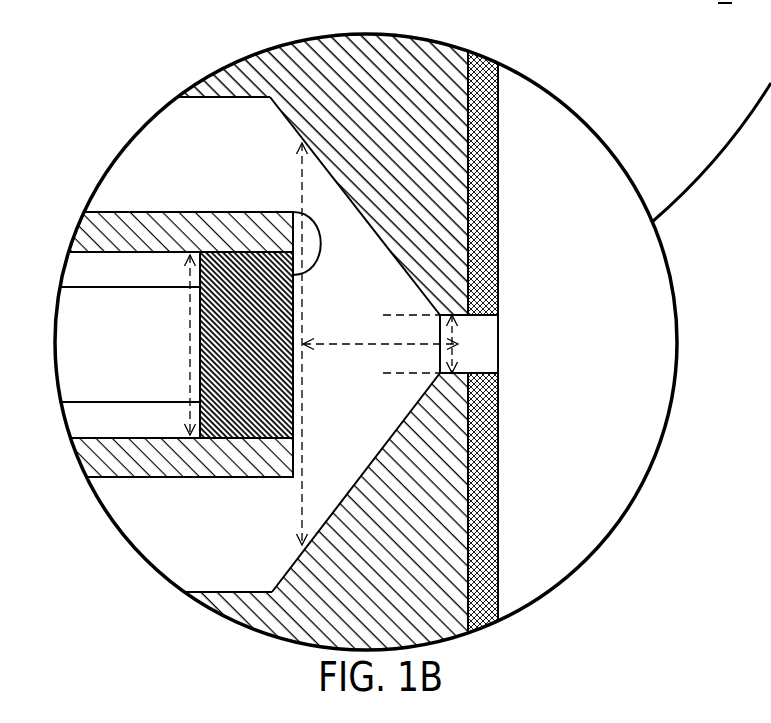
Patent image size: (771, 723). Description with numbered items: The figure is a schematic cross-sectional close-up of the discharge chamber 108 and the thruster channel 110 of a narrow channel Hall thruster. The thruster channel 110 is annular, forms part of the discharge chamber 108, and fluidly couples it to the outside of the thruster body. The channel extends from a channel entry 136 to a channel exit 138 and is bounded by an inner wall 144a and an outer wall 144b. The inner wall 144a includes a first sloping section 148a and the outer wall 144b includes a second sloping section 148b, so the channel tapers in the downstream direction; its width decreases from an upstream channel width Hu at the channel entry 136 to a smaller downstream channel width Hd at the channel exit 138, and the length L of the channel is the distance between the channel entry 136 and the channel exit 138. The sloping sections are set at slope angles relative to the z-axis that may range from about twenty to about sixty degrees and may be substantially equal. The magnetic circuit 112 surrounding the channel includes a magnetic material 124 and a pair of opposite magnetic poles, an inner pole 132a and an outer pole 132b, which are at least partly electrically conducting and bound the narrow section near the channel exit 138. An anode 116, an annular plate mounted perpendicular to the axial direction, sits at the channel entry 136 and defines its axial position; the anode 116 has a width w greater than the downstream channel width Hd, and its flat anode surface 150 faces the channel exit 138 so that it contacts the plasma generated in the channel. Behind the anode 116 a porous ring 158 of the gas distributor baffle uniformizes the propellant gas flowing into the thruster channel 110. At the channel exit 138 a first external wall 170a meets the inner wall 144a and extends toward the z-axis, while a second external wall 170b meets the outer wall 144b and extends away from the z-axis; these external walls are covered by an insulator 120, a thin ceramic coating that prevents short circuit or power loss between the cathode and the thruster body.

The discharge chamber 108 is at (368, 253).
The thruster channel 110 is at (375, 325).
The magnetic circuit 112 is at (580, 12).
The anode 116 is at (340, 197).
The insulator 120 is at (498, 545).
The magnetic material 124 is at (318, 85).
The inner pole 132a is at (428, 435).
The outer pole 132b is at (432, 250).
The channel entry 136 is at (306, 392).
The channel exit 138 is at (475, 338).
The inner wall 144a is at (228, 611).
The outer wall 144b is at (268, 96).
The first sloping section 148a is at (345, 485).
The second sloping section 148b is at (315, 170).
The anode surface 150 is at (425, 476).
The porous ring 158 is at (200, 365).
The first external wall 170a is at (498, 447).
The second external wall 170b is at (498, 175).
The anode width w is at (190, 328).
The channel length L is at (303, 343).
The upstream channel width Hu is at (317, 523).
The downstream channel width Hd is at (468, 353).